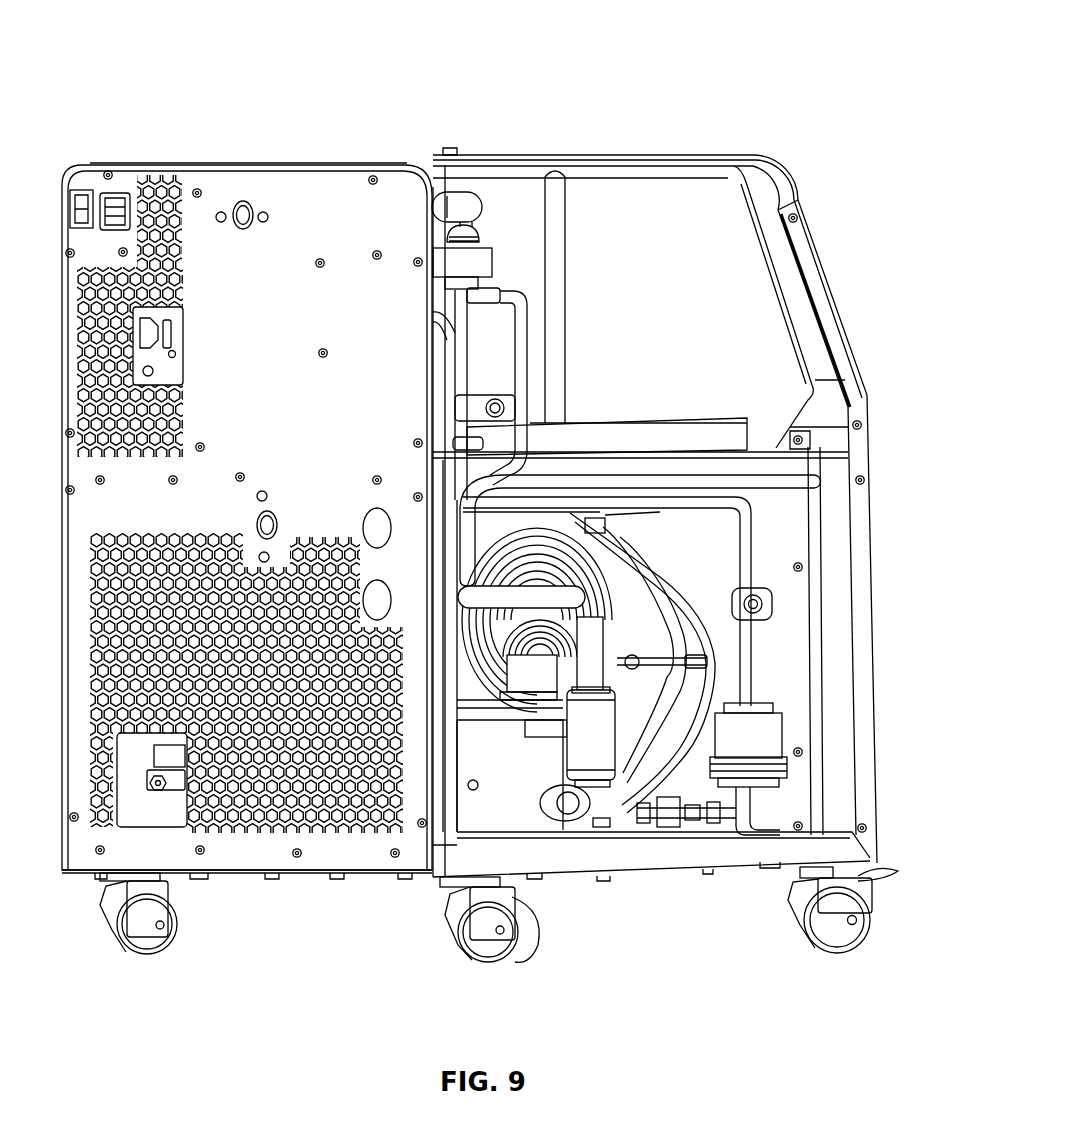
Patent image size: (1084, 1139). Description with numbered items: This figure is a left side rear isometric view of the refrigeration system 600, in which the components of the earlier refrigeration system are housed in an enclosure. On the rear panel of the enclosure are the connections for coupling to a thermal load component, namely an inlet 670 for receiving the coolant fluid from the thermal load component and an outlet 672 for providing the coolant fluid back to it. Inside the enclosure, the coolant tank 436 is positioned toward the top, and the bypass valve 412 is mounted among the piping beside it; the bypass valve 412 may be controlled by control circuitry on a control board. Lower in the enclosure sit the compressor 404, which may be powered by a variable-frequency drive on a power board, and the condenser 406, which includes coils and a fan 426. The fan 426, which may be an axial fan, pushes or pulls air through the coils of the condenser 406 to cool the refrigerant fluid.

The refrigeration system 600 is at (503, 495).
The inlet 670 is at (243, 201).
The outlet 672 is at (268, 510).
The coolant tank 436 is at (623, 193).
The bypass valve 412 is at (478, 258).
The fan 426 is at (665, 680).
The condenser 406 is at (780, 687).
The compressor 404 is at (507, 797).